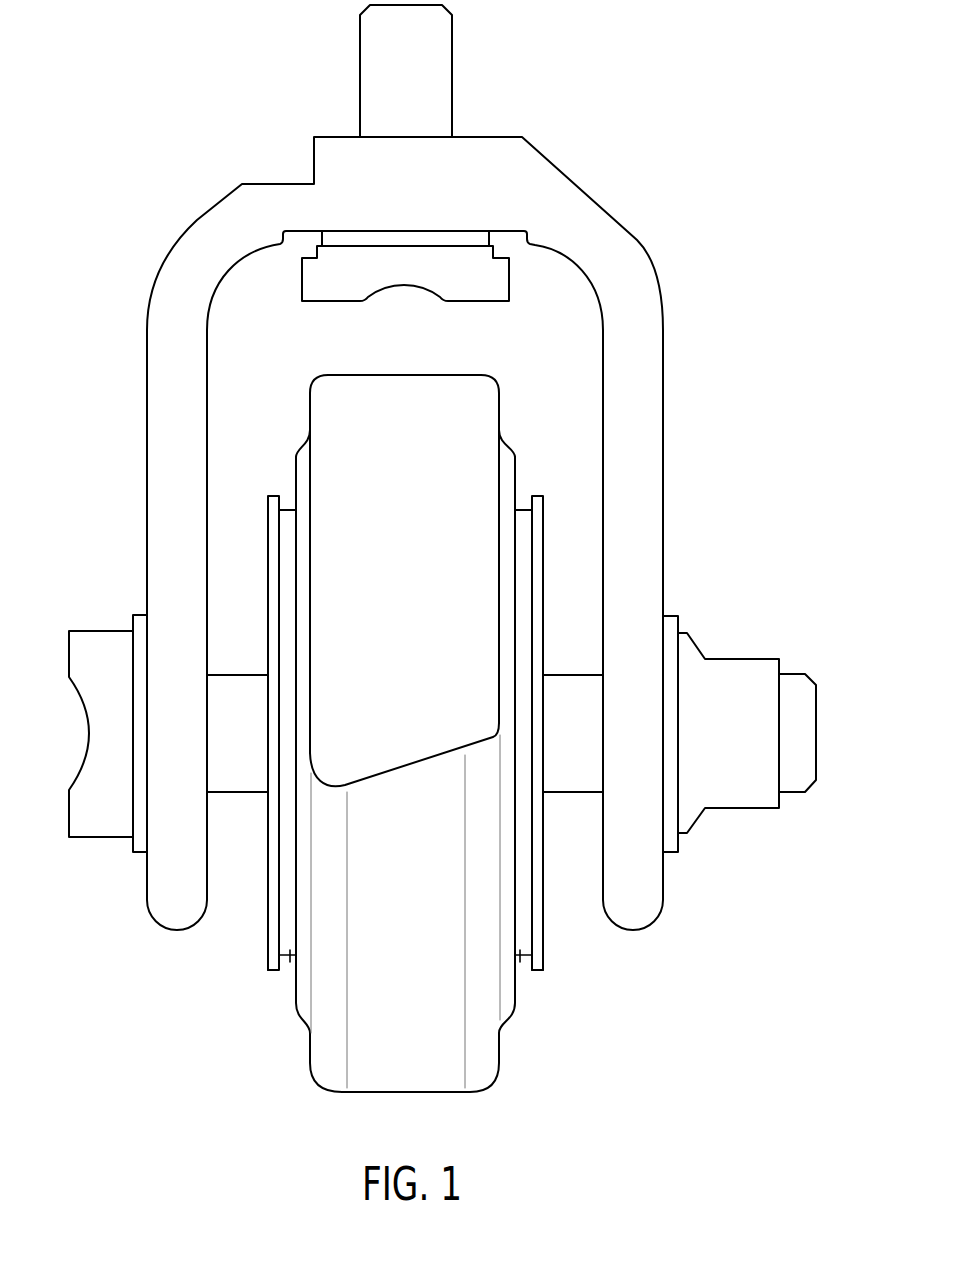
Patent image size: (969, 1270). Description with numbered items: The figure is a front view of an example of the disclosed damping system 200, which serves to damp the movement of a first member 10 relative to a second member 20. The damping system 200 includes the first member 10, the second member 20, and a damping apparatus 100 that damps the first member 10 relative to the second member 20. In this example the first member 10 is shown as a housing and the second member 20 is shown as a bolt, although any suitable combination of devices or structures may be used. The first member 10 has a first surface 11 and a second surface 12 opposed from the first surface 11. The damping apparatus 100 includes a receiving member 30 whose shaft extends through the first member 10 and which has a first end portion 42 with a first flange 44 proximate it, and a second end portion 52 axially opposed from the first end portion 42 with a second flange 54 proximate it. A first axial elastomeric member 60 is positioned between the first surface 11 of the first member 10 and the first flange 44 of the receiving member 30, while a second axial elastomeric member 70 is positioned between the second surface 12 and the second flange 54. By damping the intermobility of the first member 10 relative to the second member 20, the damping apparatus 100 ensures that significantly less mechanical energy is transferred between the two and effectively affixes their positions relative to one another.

The damping system 200 is at (710, 96).
The damping apparatus 100 is at (407, 690).
The first member 10 is at (484, 374).
The first surface 11 is at (518, 475).
The second surface 12 is at (293, 475).
The second member 20 is at (796, 683).
The receiving member 30 is at (544, 960).
The first end portion 42 is at (563, 565).
The first flange 44 is at (544, 922).
The second end portion 52 is at (252, 563).
The second flange 54 is at (267, 937).
The first axial elastomeric member 60 is at (530, 972).
The second axial elastomeric member 70 is at (279, 972).